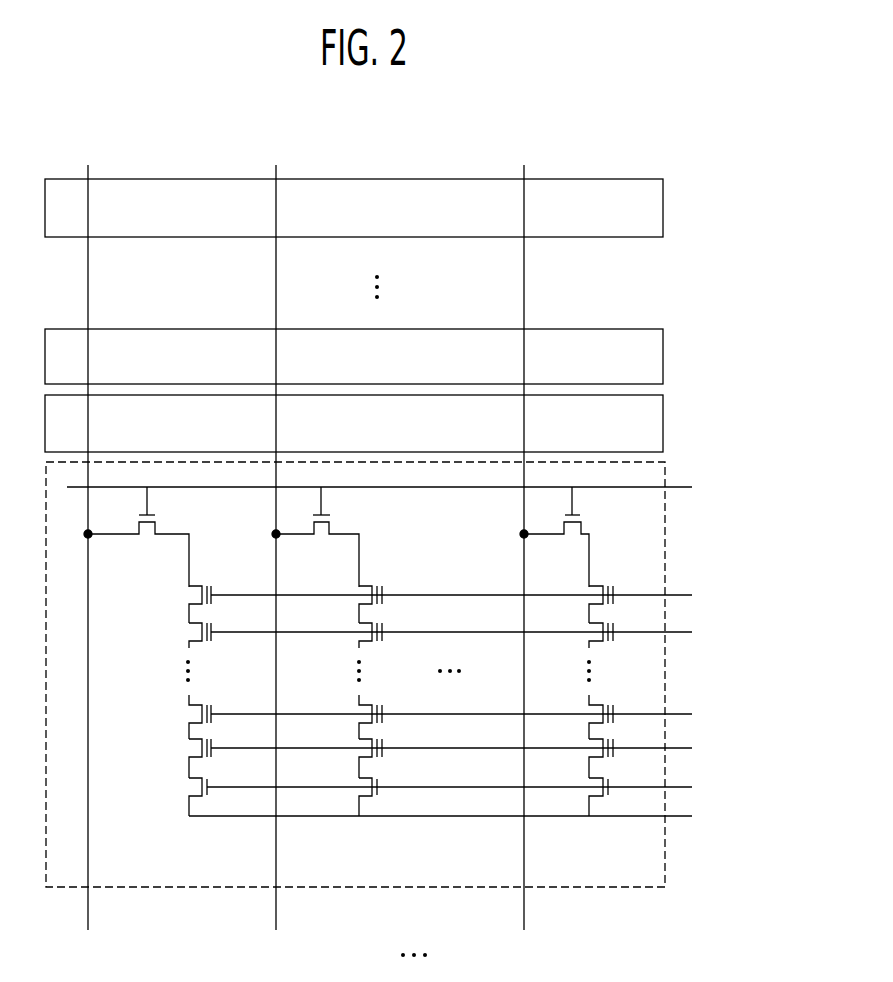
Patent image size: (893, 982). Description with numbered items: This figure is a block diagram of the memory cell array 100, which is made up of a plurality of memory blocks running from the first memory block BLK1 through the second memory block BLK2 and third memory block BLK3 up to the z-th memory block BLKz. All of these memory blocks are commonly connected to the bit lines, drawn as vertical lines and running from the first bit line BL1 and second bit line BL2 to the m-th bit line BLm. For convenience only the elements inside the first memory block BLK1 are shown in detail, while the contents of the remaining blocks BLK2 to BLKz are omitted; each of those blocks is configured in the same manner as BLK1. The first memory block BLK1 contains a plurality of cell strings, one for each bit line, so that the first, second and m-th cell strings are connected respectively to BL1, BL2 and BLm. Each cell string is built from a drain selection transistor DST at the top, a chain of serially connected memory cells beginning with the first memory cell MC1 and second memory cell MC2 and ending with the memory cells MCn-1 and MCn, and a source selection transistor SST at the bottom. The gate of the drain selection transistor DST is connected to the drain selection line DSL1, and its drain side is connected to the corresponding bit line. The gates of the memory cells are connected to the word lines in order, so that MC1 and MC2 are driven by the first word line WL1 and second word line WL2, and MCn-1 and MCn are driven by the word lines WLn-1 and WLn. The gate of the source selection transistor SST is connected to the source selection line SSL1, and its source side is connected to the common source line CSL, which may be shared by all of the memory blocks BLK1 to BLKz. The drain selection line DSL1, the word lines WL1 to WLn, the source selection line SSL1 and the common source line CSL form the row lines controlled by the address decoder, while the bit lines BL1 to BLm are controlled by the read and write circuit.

The memory cell array 100 is at (750, 154).
The z-th memory block BLKz is at (354, 208).
The third memory block BLK3 is at (354, 356).
The second memory block BLK2 is at (354, 423).
The first memory block BLK1 is at (665, 856).
The first bit line BL1 is at (86, 564).
The second bit line BL2 is at (275, 564).
The m-th bit line BLm is at (524, 564).
The drain selection line DSL1 is at (399, 487).
The drain selection transistor DST is at (136, 537).
The first memory cell MC1 is at (181, 601).
The second memory cell MC2 is at (181, 633).
The (n-1)-th memory cell MCn-1 is at (170, 717).
The n-th memory cell MCn is at (179, 756).
The source selection transistor SST is at (172, 819).
The first word line WL1 is at (470, 595).
The second word line WL2 is at (471, 632).
The (n-1)-th word line WLn-1 is at (479, 714).
The n-th word line WLn is at (473, 749).
The source selection line SSL1 is at (471, 787).
The common source line CSL is at (459, 815).